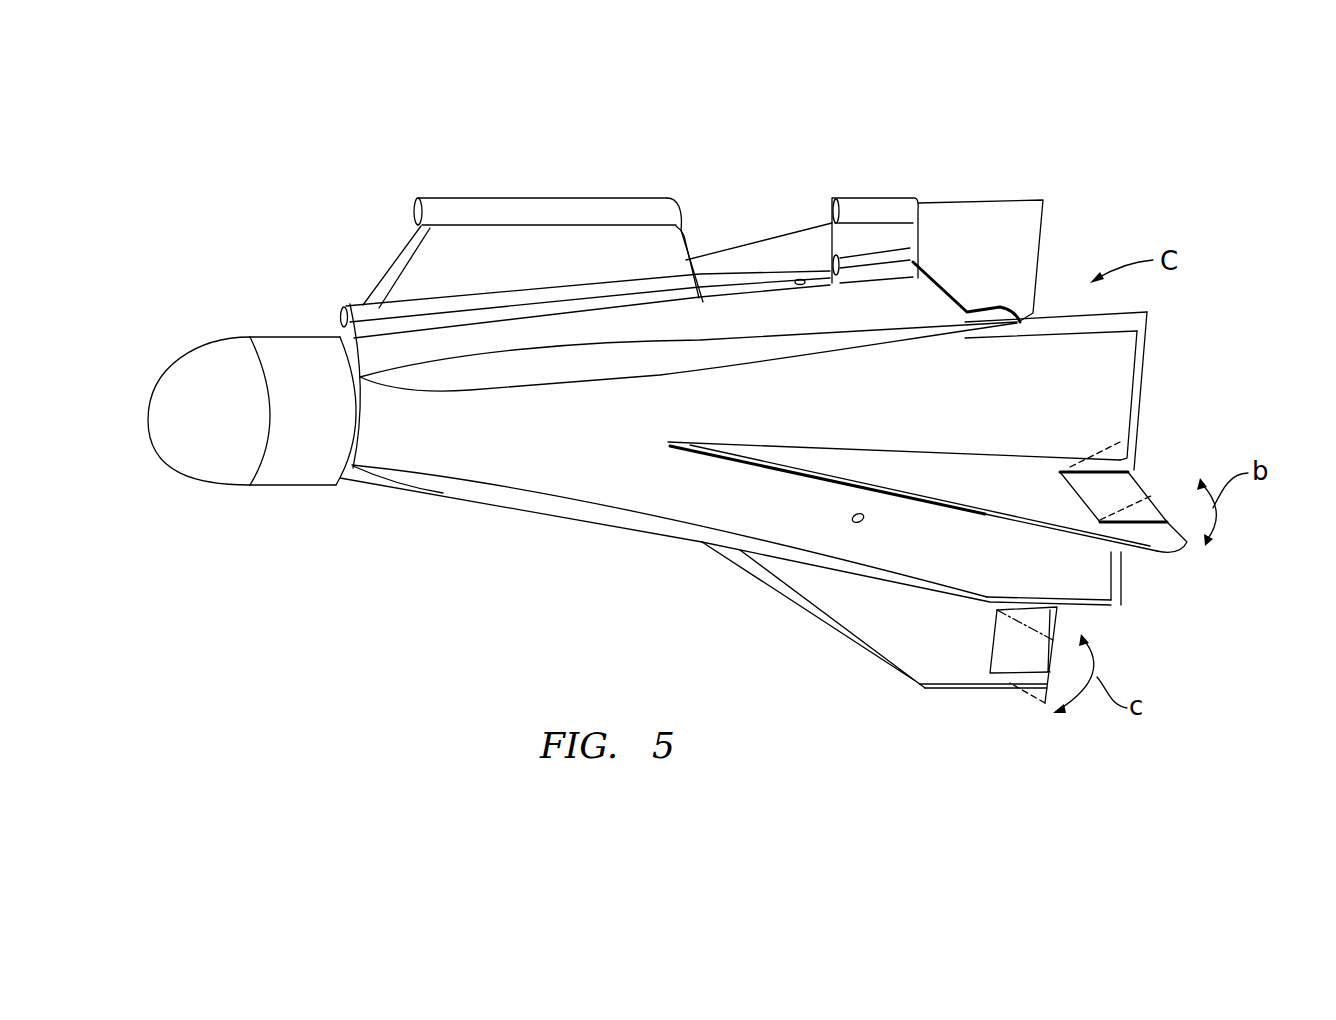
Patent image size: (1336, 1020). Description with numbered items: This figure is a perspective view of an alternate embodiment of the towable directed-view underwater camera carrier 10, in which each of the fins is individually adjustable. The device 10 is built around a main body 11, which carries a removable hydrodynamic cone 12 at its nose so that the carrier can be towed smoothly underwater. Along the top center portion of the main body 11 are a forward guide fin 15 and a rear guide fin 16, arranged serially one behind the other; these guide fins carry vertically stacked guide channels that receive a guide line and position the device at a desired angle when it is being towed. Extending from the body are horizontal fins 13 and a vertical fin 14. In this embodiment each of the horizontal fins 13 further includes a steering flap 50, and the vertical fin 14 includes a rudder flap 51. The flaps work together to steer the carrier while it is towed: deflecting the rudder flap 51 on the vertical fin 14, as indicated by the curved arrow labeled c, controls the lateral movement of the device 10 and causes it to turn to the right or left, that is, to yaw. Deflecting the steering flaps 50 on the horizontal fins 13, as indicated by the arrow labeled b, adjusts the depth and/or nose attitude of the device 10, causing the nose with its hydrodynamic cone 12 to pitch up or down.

The towable directed-view underwater camera carrier 10 is at (283, 178).
The main body 11 is at (485, 458).
The removable hydrodynamic cone 12 is at (227, 433).
The horizontal fin 13 is at (1031, 497).
The vertical fin 14 is at (943, 640).
The forward guide fin 15 is at (545, 269).
The rear guide fin 16 is at (882, 237).
The steering flap 50 is at (1143, 473).
The rudder flap 51 is at (1037, 693).